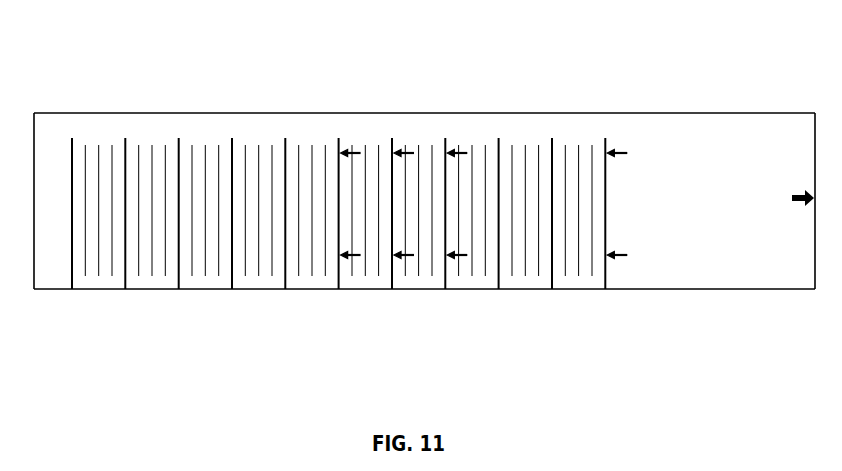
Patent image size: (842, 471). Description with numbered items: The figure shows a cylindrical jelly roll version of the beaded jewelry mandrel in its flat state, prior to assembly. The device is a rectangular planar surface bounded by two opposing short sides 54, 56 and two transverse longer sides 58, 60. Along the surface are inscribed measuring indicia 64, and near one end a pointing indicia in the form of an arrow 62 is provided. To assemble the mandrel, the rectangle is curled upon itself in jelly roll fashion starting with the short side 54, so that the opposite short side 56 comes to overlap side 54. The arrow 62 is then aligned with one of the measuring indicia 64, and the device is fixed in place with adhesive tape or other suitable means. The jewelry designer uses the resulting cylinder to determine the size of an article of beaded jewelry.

The short opposing side 54 is at (43, 271).
The short opposing side 56 is at (808, 271).
The long opposing side 58 is at (144, 105).
The long opposing side 60 is at (496, 299).
The arrow 62 is at (791, 182).
The inscribed measuring indicia 64 is at (242, 153).